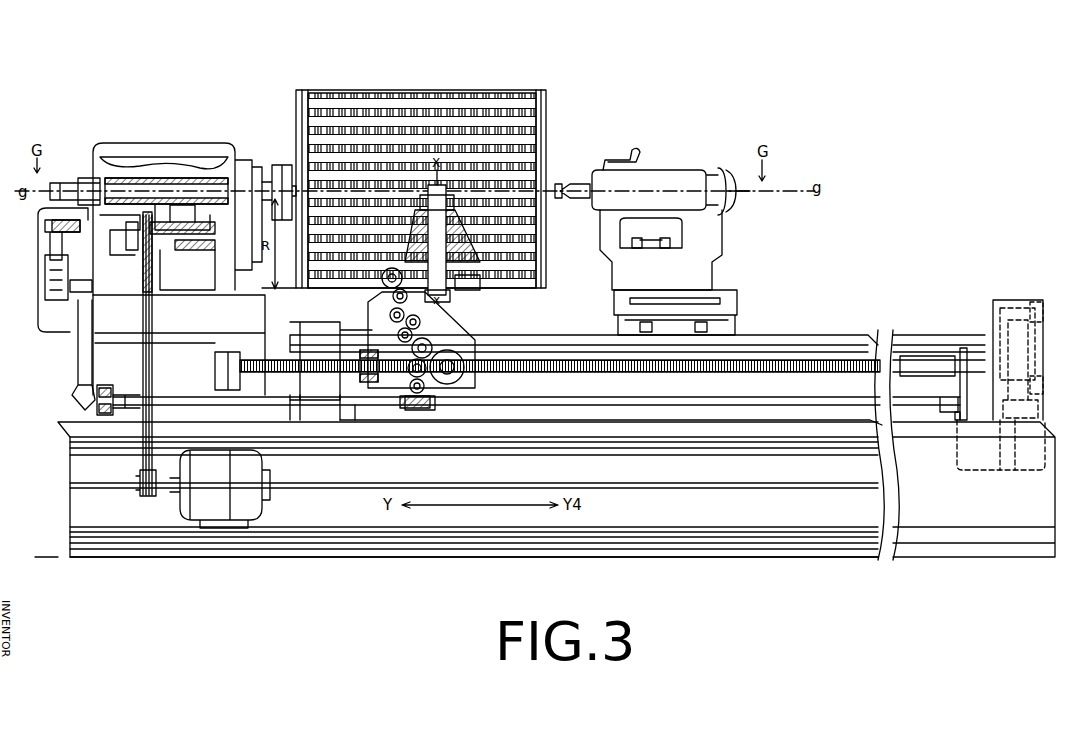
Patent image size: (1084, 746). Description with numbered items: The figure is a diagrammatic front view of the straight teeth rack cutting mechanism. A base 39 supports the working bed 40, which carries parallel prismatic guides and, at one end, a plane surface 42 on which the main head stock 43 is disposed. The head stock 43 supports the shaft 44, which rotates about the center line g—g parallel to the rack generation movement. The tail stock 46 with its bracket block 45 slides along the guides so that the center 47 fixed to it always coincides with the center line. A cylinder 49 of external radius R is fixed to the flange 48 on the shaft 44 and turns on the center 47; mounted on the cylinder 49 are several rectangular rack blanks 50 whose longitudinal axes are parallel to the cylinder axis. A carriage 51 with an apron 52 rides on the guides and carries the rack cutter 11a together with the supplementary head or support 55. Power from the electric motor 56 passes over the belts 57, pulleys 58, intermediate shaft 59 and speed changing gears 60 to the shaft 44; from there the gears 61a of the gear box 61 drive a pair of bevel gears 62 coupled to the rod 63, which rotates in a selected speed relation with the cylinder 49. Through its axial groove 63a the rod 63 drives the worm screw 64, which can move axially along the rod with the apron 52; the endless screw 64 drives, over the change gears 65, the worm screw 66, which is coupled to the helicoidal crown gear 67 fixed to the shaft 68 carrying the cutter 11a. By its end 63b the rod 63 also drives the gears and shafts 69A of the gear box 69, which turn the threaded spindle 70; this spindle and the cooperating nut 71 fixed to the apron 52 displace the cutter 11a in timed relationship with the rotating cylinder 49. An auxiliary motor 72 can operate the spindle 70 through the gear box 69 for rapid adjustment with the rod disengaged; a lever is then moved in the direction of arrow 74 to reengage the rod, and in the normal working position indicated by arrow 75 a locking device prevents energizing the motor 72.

The rack cutter 11a is at (448, 205).
The base 39 is at (70, 487).
The working bed 40 is at (133, 408).
The plane surface 42 is at (106, 340).
The main head stock 43 is at (192, 139).
The shaft 44 is at (142, 178).
The bracket block 45 is at (732, 271).
The tail stock 46 is at (694, 175).
The center 47 is at (575, 180).
The flange 48 is at (281, 165).
The cylinder 49 is at (546, 118).
The rack blanks 50 is at (453, 88).
The carriage 51 is at (322, 326).
The apron 52 is at (352, 412).
The supplementary head or support 55 is at (447, 240).
The electric motor 56 is at (250, 505).
The belts 57 is at (154, 415).
The pulleys 58 is at (136, 240).
The intermediate shaft 59 is at (215, 232).
The speed changing gears 60 is at (195, 250).
The gear box 61 is at (48, 330).
The gears 61a is at (50, 275).
The pair of bevel gears 62 is at (74, 396).
The rod 63 is at (258, 372).
The axial groove 63a is at (390, 398).
The end of rod 63b is at (932, 400).
The worm screw 64 is at (436, 404).
The change gears 65 is at (462, 341).
The worm screw 66 is at (382, 285).
The helicoidal crown gear 67 is at (462, 290).
The shaft 68 is at (419, 244).
The gear box 69 is at (1030, 291).
The gears and shafts 69A is at (1035, 305).
The threaded spindle 70 is at (795, 345).
The nut 71 is at (371, 352).
The auxiliary motor 72 is at (976, 465).
The arrow 74 is at (935, 411).
The arrow 75 is at (962, 408).